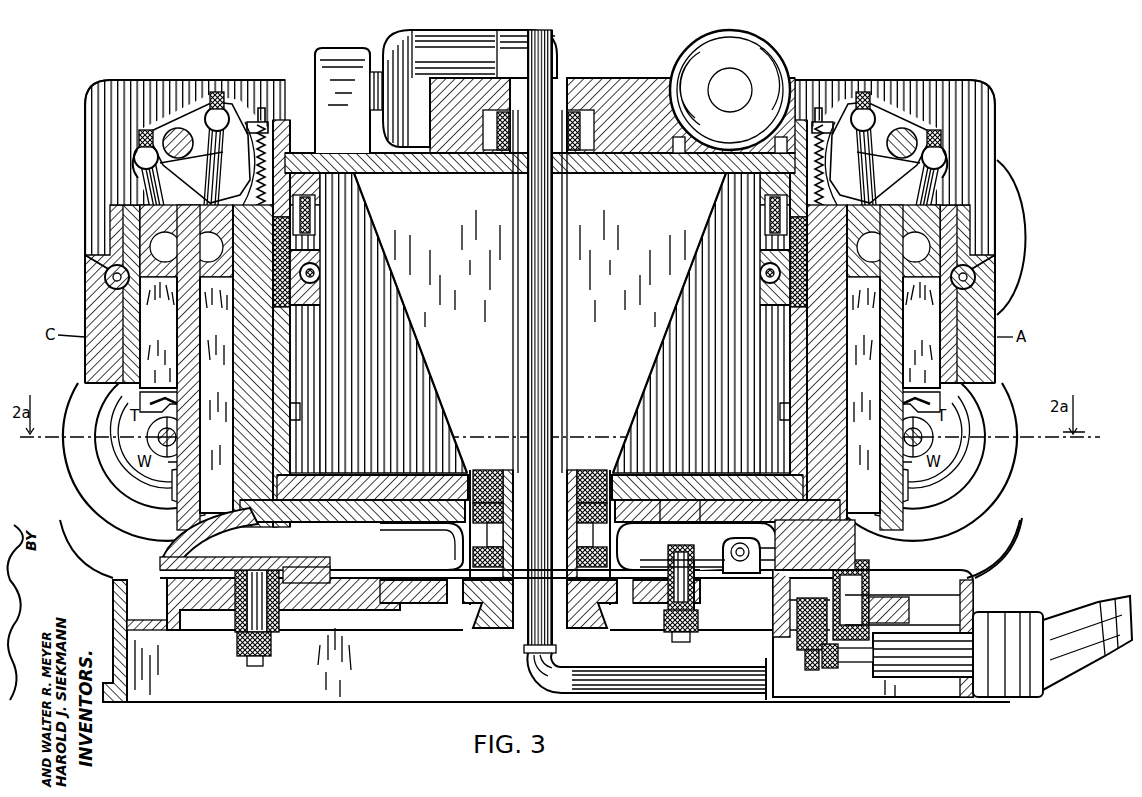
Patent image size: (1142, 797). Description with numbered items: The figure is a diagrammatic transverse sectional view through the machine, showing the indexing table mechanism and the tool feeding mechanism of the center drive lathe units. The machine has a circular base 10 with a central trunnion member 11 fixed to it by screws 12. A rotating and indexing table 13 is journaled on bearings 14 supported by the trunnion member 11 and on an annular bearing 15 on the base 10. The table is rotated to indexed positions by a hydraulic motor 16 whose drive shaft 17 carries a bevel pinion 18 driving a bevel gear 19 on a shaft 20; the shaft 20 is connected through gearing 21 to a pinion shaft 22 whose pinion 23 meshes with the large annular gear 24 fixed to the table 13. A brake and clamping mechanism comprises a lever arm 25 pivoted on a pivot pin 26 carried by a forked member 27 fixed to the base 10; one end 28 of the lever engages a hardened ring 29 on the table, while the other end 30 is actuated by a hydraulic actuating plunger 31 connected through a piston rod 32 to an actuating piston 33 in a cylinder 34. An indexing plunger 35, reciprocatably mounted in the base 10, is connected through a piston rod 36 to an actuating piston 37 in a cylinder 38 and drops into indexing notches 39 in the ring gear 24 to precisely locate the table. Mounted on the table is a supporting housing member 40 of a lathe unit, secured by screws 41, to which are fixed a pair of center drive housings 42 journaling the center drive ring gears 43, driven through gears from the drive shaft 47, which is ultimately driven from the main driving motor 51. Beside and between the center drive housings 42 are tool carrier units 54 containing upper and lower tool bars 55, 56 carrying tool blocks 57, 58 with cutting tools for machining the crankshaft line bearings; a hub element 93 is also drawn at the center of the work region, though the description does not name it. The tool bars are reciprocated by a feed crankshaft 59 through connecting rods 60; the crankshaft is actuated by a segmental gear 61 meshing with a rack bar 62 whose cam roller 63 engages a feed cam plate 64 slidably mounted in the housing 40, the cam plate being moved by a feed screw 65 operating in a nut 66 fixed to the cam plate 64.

The circular base 10 is at (112, 702).
The central trunnion member 11 is at (495, 630).
The screws 12 is at (450, 560).
The rotating and indexing table 13 is at (300, 545).
The bearings 14 is at (546, 520).
The annular bearing 15 is at (305, 558).
The hydraulic motor 16 is at (1070, 665).
The drive shaft 17 is at (866, 665).
The bevel pinion 18 is at (830, 670).
The bevel gear 19 is at (795, 640).
The shaft 20 is at (808, 652).
The gearing 21 is at (905, 603).
The pinion shaft 22 is at (925, 655).
The pinion 23 is at (885, 584).
The large annular gear 24 is at (514, 591).
The lever arm 25 is at (691, 511).
The pivot pin 26 is at (699, 535).
The forked member 27 is at (760, 527).
The end of lever 28 is at (782, 540).
The hardened ring 29 is at (762, 552).
The other end of lever 30 is at (679, 511).
The hydraulic actuating plunger 31 is at (668, 555).
The piston rod 32 is at (700, 595).
The actuating piston 33 is at (666, 632).
The cylinder 34 is at (684, 642).
The indexing plunger 35 is at (240, 610).
The piston rod 36 is at (279, 618).
The actuating piston 37 is at (240, 652).
The cylinder 38 is at (258, 666).
The indexing notches 39 is at (283, 602).
The supporting housing member 40 is at (405, 308).
The screws 41 is at (410, 458).
The center drive housings 42 is at (72, 450).
The center drive ring gears 43 is at (103, 473).
The drive shaft 47 is at (115, 290).
The main driving motor 51 is at (472, 65).
The tool carrier units 54 is at (92, 360).
The upper tool bar 55 is at (178, 318).
The lower tool bar 56 is at (233, 318).
The tool block 57 is at (160, 392).
The tool block 58 is at (178, 492).
The feed crankshaft 59 is at (195, 115).
The connecting rods 60 is at (200, 185).
The segmental gear 61 is at (248, 172).
The rack bar 62 is at (256, 116).
The cam roller 63 is at (273, 255).
The feed cam plate 64 is at (312, 213).
The feed screw 65 is at (322, 272).
The nut 66 is at (334, 296).
The hub 93 is at (170, 430).